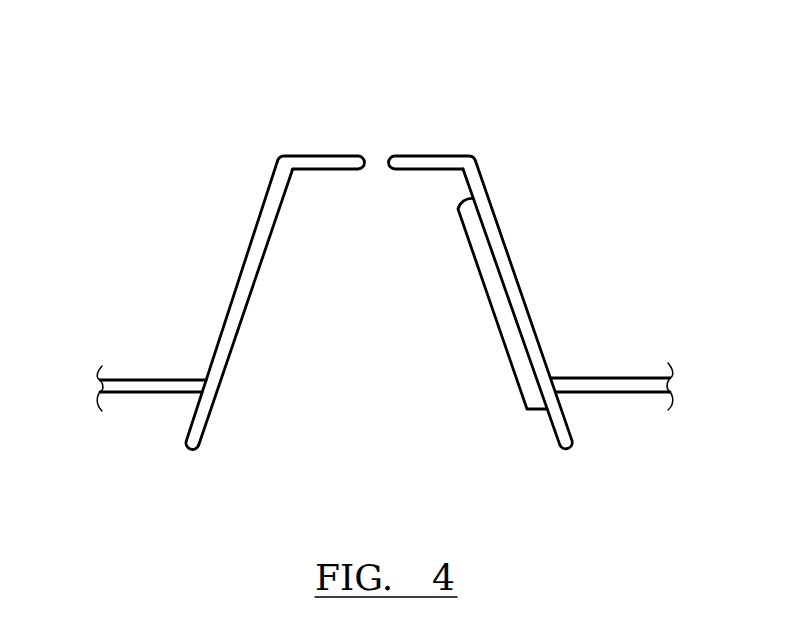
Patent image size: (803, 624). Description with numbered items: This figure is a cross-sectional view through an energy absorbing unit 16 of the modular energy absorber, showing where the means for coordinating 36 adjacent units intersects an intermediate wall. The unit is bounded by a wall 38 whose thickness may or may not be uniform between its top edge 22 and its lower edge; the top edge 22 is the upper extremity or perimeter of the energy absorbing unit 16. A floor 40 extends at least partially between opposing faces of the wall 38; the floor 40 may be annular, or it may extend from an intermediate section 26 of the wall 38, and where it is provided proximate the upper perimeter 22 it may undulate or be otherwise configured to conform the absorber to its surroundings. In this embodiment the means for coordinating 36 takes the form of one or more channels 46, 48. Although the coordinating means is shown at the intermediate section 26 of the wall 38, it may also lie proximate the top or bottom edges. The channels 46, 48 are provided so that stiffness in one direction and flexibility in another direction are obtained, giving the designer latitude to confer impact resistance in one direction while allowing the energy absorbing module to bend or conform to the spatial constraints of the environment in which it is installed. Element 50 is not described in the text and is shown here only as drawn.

The energy absorbing unit 16 is at (404, 121).
The top edge 22 is at (277, 156).
The intermediate section 26 is at (256, 278).
The means for coordinating 36 is at (628, 393).
The wall 38 is at (232, 292).
The floor 40 is at (430, 153).
The channel 46 is at (150, 352).
The channel 48 is at (598, 372).
The liner strip 50 is at (498, 331).